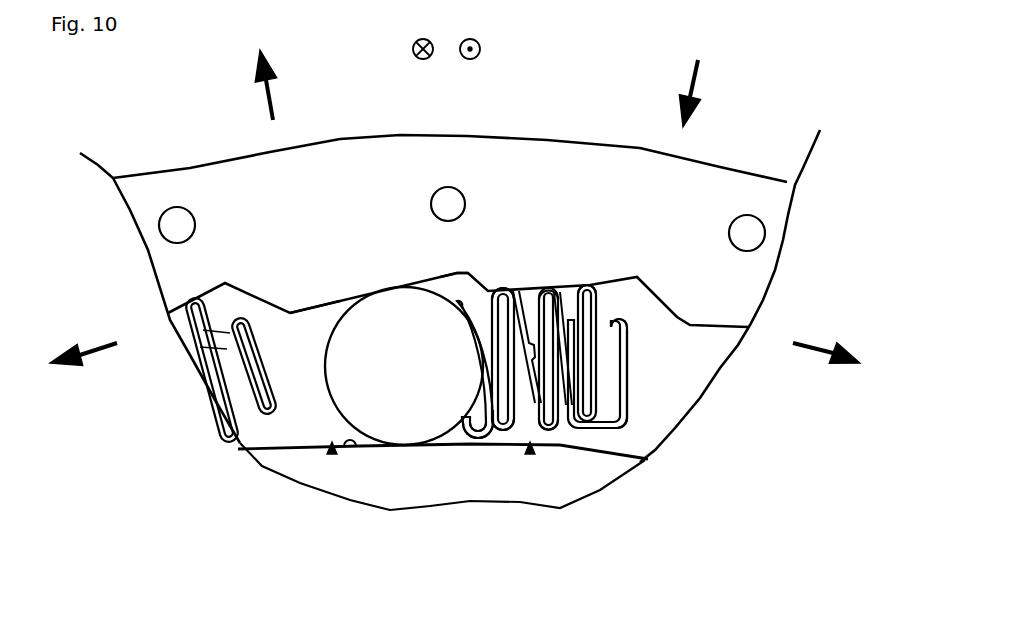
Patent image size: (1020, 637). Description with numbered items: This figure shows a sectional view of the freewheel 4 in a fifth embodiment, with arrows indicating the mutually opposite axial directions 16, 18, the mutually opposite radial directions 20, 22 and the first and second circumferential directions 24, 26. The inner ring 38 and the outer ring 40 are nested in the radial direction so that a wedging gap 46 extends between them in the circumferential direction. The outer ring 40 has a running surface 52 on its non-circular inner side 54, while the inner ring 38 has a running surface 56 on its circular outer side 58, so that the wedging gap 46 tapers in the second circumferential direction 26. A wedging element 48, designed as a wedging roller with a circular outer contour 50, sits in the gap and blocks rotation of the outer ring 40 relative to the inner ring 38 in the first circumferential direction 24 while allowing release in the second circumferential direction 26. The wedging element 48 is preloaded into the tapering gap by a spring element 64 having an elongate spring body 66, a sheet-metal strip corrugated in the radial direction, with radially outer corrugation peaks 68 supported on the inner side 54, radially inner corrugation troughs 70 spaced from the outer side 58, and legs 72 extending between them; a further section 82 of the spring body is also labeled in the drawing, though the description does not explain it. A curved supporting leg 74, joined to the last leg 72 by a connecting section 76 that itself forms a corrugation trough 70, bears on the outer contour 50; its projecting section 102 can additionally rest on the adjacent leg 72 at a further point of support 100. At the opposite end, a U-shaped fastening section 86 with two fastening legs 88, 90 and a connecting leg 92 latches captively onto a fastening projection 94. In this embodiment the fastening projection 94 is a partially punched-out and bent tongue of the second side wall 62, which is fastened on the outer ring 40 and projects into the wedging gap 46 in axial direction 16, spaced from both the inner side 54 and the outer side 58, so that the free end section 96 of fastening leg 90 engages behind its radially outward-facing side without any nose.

The freewheel 4 is at (775, 125).
The axial direction 16 is at (481, 49).
The axial direction 18 is at (412, 49).
The radial direction 20 is at (267, 95).
The radial direction 22 is at (698, 80).
The first circumferential direction 24 is at (813, 353).
The second circumferential direction 26 is at (100, 353).
The inner ring 38 is at (318, 481).
The outer ring 40 is at (160, 183).
The wedging gap 46 is at (332, 452).
The wedging element 48 is at (364, 414).
The outer contour 50 is at (337, 316).
The running surface 52 is at (322, 300).
The inner side 54 is at (457, 270).
The running surface 56 is at (355, 446).
The outer side 58 is at (262, 455).
The second side wall 62 is at (292, 353).
The spring element 64 is at (530, 452).
The spring body 66 is at (594, 420).
The corrugation peak 68 is at (497, 290).
The corrugation trough 70 is at (547, 430).
The leg 72 is at (549, 288).
The supporting leg 74 is at (465, 354).
The connecting section 76 is at (468, 436).
The spring leaf 82 is at (536, 287).
The fastening section 86 is at (636, 411).
The fastening leg 88 is at (597, 342).
The fastening leg 90 is at (627, 380).
The connecting leg 92 is at (612, 424).
The fastening projection 94 is at (607, 353).
The free end section 96 is at (613, 318).
The further point of support 100 is at (522, 289).
The projecting section 102 is at (462, 428).